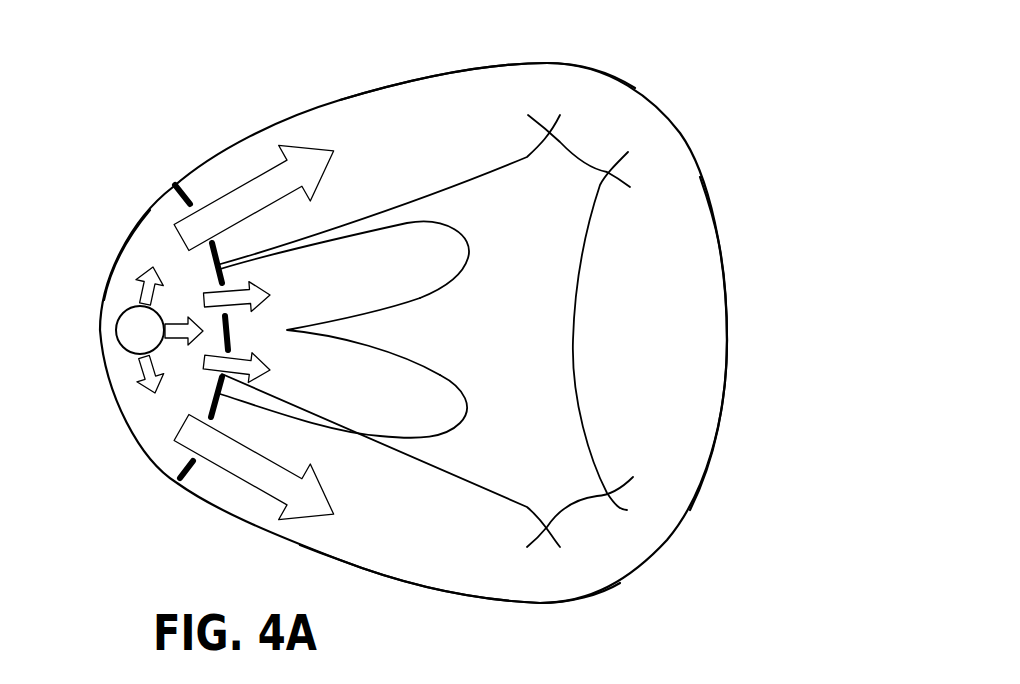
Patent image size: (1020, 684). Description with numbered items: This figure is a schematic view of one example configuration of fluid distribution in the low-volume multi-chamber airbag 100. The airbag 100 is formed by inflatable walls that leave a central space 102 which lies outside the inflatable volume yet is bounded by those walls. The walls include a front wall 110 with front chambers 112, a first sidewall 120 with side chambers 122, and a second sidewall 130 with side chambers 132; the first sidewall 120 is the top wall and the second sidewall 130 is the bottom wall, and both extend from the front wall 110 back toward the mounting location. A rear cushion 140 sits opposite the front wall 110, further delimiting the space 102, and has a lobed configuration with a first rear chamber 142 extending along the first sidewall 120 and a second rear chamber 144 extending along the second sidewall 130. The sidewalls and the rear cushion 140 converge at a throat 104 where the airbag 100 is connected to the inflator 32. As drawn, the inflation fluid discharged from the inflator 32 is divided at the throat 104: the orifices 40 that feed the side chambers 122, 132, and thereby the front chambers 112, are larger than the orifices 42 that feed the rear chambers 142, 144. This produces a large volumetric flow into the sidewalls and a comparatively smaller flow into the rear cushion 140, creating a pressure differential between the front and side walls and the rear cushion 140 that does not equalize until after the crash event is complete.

The airbag 100 is at (660, 72).
The central space 102 is at (553, 265).
The throat 104 is at (153, 243).
The front wall 110 is at (751, 343).
The front chambers 112 is at (653, 277).
The first sidewall 120 is at (487, 63).
The side chambers 122 is at (457, 123).
The second sidewall 130 is at (460, 583).
The side chambers 132 is at (400, 530).
The inflator 32 is at (135, 330).
The orifices 40 is at (200, 192).
The orifices 42 is at (252, 345).
The rear cushion 140 is at (387, 365).
The first rear chamber 142 is at (453, 250).
The second rear chamber 144 is at (453, 407).